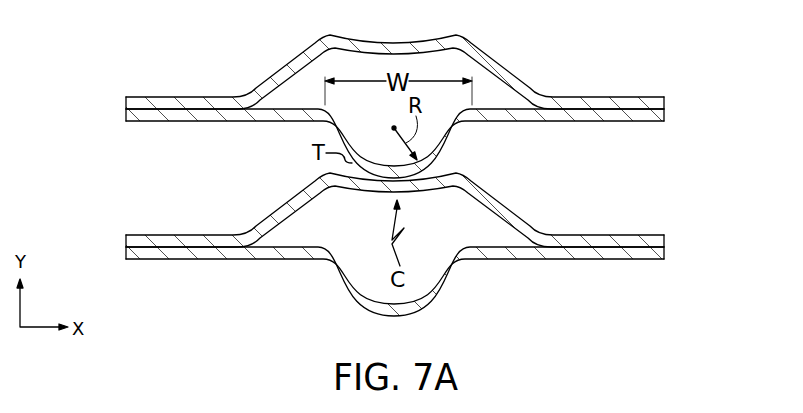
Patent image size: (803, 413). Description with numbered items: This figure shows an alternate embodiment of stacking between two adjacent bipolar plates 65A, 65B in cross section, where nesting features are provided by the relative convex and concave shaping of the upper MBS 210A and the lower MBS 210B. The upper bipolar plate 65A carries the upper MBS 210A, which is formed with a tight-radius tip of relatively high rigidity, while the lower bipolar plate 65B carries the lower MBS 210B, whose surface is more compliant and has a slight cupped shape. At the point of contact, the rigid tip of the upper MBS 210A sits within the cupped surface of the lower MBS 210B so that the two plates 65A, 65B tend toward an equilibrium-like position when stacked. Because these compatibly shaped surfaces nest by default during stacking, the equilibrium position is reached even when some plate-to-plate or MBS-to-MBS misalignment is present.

The bipolar plate 65A is at (401, 206).
The bipolar plate 65B is at (401, 275).
The upper MBS 210A is at (445, 140).
The lower MBS 210B is at (445, 279).